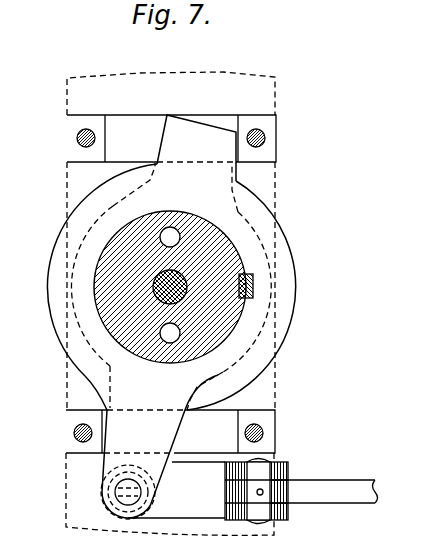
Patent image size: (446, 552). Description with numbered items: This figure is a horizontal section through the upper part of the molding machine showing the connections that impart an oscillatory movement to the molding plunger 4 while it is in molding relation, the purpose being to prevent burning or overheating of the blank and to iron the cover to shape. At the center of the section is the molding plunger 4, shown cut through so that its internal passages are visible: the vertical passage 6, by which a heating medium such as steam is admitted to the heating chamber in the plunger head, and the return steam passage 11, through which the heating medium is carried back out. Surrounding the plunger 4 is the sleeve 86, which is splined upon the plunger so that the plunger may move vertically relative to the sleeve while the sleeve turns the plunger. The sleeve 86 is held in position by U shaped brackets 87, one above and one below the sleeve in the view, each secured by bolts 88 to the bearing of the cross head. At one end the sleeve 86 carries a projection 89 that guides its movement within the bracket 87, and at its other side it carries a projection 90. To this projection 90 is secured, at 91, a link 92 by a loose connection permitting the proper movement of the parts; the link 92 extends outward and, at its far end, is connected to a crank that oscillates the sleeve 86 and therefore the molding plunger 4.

The molding plunger 4 is at (155, 268).
The vertical passage 6 is at (167, 236).
The return steam passage 11 is at (167, 333).
The sleeve 86 is at (294, 305).
The U shaped bracket 87 is at (271, 125).
The bolt 88 is at (77, 138).
The projection 89 is at (198, 128).
The projection 90 is at (123, 423).
The loose connection 91 is at (120, 497).
The link 92 is at (333, 497).